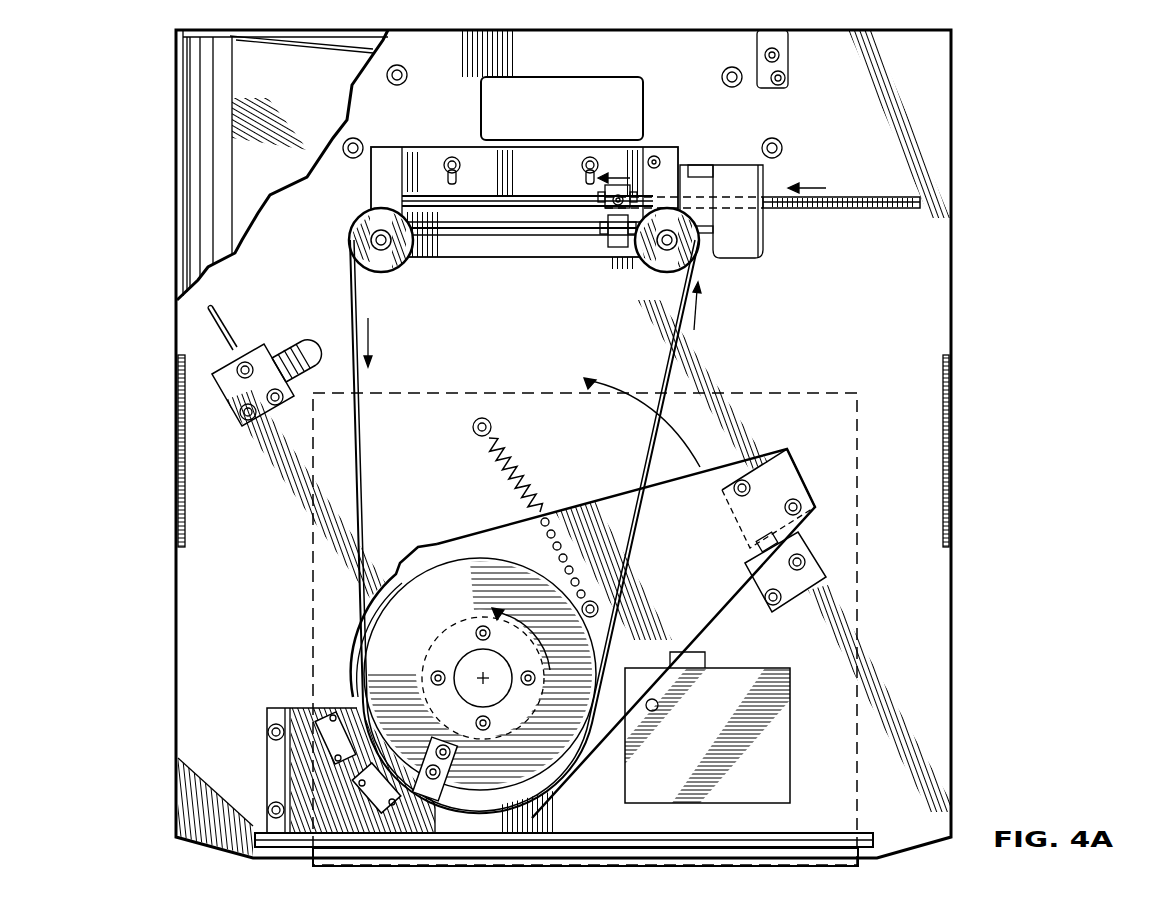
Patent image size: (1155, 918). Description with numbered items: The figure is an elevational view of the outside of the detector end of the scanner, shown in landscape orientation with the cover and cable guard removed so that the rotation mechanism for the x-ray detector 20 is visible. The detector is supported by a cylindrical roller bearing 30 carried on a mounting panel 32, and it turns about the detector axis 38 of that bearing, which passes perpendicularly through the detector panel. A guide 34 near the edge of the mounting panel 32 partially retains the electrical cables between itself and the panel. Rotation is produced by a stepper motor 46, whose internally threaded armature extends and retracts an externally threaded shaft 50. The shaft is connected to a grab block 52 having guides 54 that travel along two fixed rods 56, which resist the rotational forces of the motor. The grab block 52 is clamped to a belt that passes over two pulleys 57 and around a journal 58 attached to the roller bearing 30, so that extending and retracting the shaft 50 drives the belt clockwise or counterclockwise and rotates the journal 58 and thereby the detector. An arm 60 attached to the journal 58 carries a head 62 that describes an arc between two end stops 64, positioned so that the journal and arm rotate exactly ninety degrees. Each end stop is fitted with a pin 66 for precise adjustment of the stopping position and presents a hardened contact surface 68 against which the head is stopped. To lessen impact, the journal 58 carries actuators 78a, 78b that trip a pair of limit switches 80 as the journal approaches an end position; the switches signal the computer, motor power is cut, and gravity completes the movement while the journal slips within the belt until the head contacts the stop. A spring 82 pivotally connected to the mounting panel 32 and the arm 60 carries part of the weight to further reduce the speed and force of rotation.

The x-ray detector 20 is at (862, 390).
The cylindrical roller bearing 30 is at (470, 613).
The mounting panel 32 is at (812, 343).
The guide 34 is at (212, 322).
The detector axis 38 is at (483, 678).
The stepper motor 46 is at (748, 258).
The externally threaded shaft 50 is at (848, 197).
The grab block 52 is at (610, 248).
The guides 54 is at (608, 223).
The fixed rods 56 is at (493, 206).
The pulleys 57 is at (352, 236).
The journal 58 is at (508, 772).
The arm 60 is at (690, 575).
The head 62 is at (757, 458).
The end stops 64 is at (812, 558).
The pins 66 is at (288, 356).
The hardened contact surfaces 68 is at (306, 352).
The actuator 78a is at (420, 556).
The actuator 78b is at (372, 746).
The limit switches 80 is at (327, 718).
The spring 82 is at (524, 488).